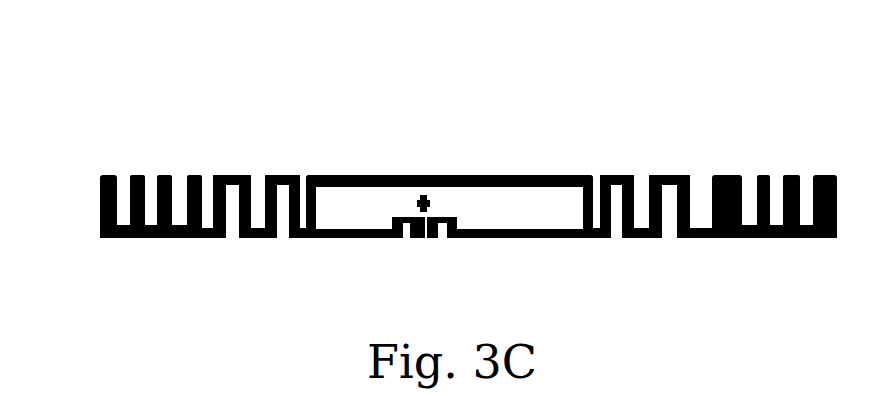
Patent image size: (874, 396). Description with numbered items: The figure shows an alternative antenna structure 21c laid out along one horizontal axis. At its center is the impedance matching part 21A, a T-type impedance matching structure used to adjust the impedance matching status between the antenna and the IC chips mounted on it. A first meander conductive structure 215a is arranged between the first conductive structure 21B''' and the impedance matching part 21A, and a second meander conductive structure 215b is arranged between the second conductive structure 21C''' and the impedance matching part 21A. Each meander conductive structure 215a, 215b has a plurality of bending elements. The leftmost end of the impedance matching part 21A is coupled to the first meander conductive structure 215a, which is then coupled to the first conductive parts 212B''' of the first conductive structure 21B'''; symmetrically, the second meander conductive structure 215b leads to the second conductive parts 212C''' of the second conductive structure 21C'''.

The antenna structure 21c is at (78, 80).
The impedance matching part 21A is at (441, 149).
The first conductive structure 21B''' is at (198, 169).
The first conductive parts 212B''' is at (242, 177).
The second conductive structure 21C''' is at (741, 162).
The second conductive parts 212C''' is at (811, 177).
The first meander conductive structure 215a is at (242, 237).
The second meander conductive structure 215b is at (600, 237).